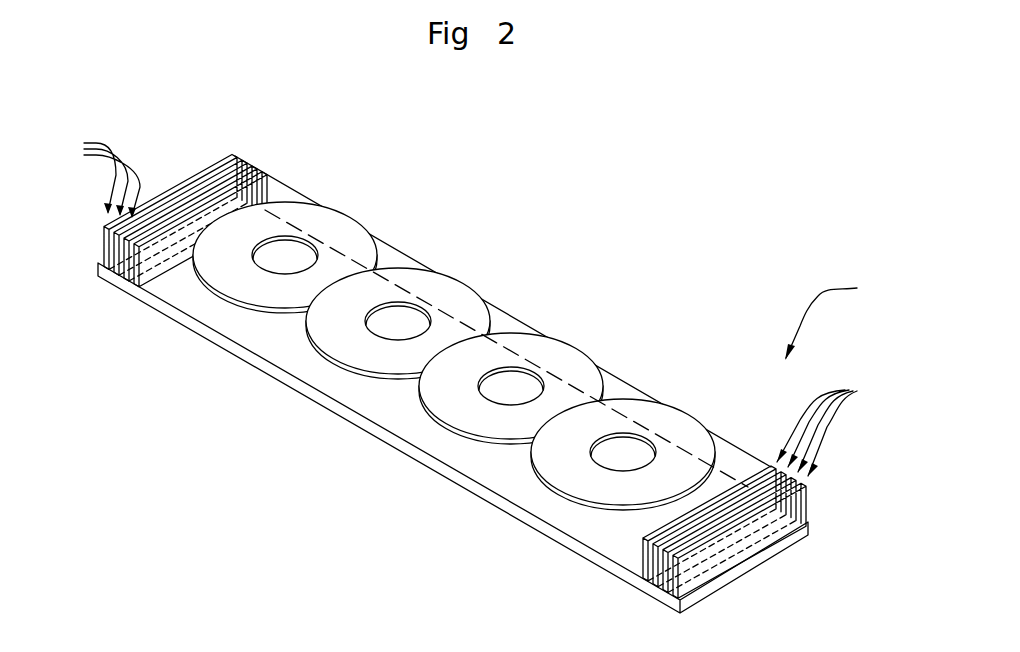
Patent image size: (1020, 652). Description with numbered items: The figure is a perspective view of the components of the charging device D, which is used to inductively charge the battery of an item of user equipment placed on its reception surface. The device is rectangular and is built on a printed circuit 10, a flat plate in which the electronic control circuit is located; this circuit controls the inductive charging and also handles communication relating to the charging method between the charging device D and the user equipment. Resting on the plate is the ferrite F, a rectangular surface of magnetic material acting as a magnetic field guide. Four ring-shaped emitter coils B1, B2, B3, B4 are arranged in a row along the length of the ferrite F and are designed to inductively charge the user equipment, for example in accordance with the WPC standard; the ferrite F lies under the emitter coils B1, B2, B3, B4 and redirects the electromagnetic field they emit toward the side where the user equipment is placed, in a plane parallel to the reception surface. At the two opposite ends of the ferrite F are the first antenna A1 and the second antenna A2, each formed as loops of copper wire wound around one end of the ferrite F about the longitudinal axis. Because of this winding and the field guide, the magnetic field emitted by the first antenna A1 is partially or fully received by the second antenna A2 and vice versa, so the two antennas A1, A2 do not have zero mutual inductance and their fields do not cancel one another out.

The printed circuit 10 is at (808, 533).
The ferrite F is at (810, 497).
The first antenna A1 is at (103, 167).
The second antenna A2 is at (826, 418).
The emitter coil B1 is at (298, 213).
The emitter coil B2 is at (409, 277).
The emitter coil B3 is at (520, 341).
The emitter coil B4 is at (630, 403).
The charging device D is at (828, 310).